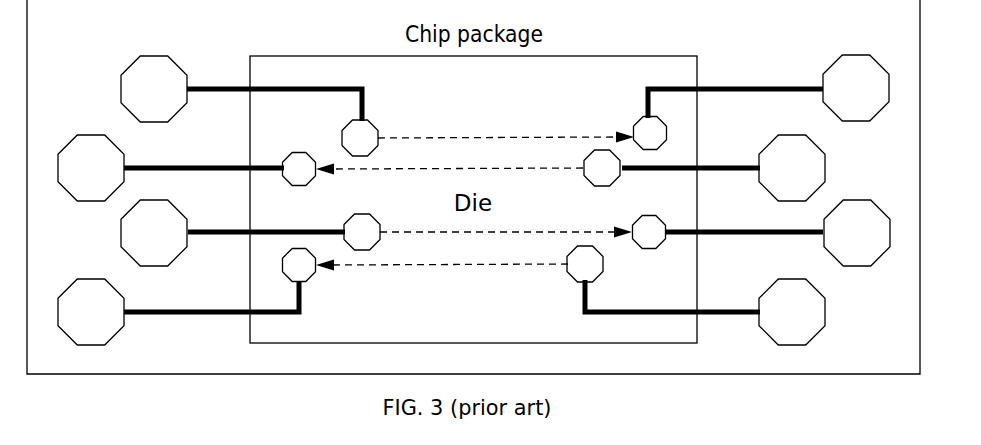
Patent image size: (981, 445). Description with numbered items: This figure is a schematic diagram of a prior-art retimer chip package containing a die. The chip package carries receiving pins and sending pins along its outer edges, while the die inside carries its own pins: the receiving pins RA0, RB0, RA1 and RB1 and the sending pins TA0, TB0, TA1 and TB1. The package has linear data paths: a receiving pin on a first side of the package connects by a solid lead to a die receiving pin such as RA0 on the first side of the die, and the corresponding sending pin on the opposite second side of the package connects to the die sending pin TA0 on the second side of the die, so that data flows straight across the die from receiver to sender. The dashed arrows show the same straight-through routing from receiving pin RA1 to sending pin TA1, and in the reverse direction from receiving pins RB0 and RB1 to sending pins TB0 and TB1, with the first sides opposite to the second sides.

The receiving pin on the die RA0 is at (488, 138).
The receiving pin on the die RB0 is at (468, 168).
The receiving pin on the die RA1 is at (488, 232).
The receiving pin on the die RB1 is at (459, 264).
The sending pin on the die TB0 is at (299, 169).
The sending pin on the die TA0 is at (650, 133).
The sending pin on the die TA1 is at (649, 232).
The sending pin on the die TB1 is at (299, 265).